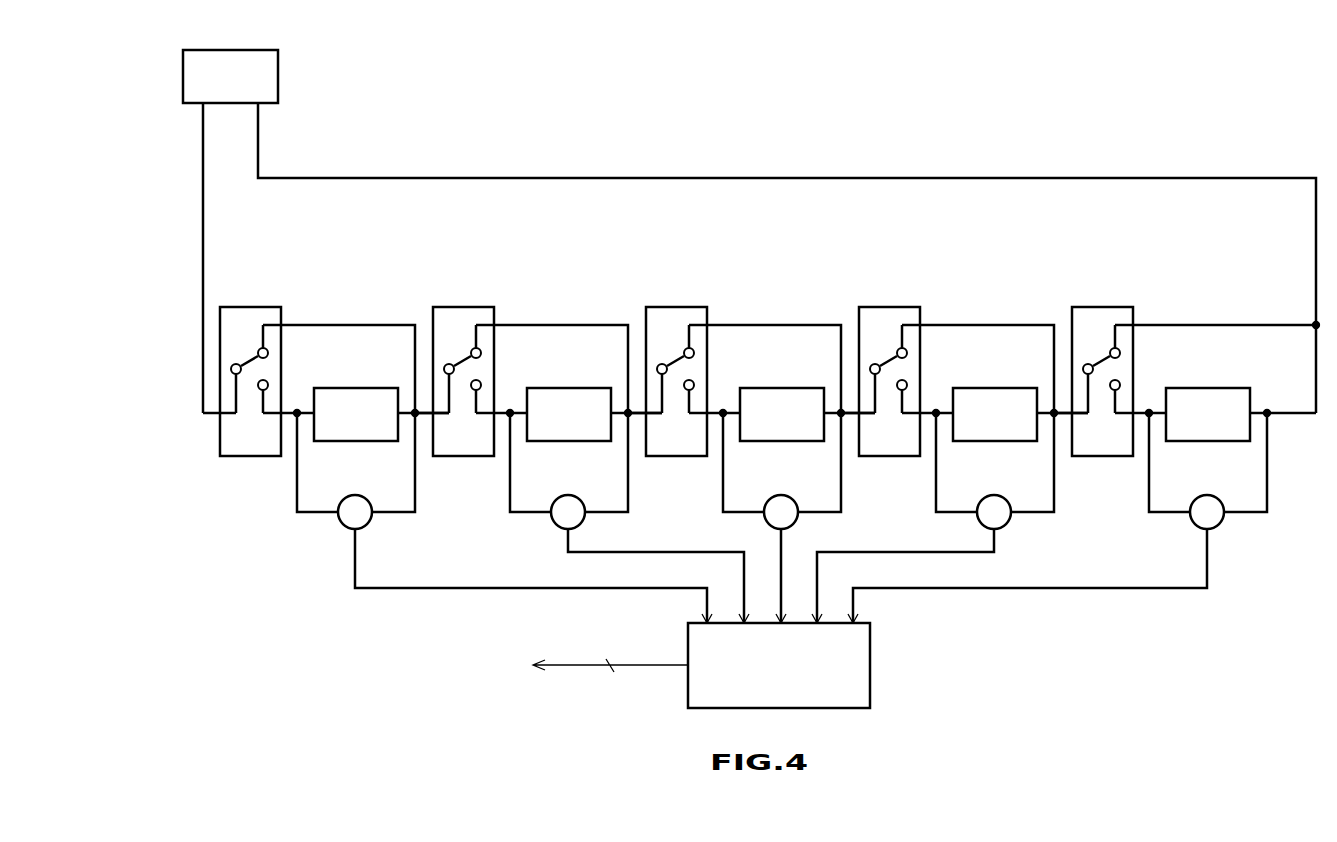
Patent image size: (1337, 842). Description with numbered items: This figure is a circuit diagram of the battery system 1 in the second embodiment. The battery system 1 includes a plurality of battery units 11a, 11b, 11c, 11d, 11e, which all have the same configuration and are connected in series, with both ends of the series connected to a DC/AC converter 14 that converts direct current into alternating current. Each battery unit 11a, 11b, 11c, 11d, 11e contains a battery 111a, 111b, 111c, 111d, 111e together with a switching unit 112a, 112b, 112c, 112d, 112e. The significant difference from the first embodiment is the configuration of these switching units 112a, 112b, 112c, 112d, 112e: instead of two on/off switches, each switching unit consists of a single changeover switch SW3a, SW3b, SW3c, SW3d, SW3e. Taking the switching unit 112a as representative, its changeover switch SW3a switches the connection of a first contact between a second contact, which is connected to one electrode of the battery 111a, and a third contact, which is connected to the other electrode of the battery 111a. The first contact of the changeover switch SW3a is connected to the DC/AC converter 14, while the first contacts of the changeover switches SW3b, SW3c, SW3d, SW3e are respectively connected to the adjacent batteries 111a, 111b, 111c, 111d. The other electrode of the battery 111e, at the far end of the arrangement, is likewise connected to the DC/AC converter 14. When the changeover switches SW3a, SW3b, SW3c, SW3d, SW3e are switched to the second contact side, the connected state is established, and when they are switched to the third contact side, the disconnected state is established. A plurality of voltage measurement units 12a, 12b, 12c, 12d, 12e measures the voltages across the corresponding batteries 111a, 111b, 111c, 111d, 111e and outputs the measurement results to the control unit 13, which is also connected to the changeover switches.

The battery system 1 is at (1138, 133).
The DC/AC converter 14 is at (230, 50).
The control unit 13 is at (870, 665).
The battery unit 11a is at (455, 436).
The battery unit 11b is at (580, 436).
The battery unit 11c is at (752, 436).
The battery unit 11d is at (952, 436).
The battery unit 11e is at (1084, 436).
The battery 111a is at (325, 388).
The battery 111b is at (538, 388).
The battery 111c is at (751, 388).
The battery 111d is at (964, 388).
The battery 111e is at (1177, 388).
The switching unit 112a is at (290, 354).
The switching unit 112b is at (503, 354).
The switching unit 112c is at (716, 354).
The switching unit 112d is at (929, 354).
The switching unit 112e is at (1142, 354).
The voltage measurement unit 12a is at (356, 495).
The voltage measurement unit 12b is at (569, 495).
The voltage measurement unit 12c is at (782, 495).
The voltage measurement unit 12d is at (995, 495).
The voltage measurement unit 12e is at (1208, 495).
The changeover switch SW3a is at (255, 345).
The changeover switch SW3b is at (468, 345).
The changeover switch SW3c is at (681, 345).
The changeover switch SW3d is at (894, 345).
The changeover switch SW3e is at (1107, 345).